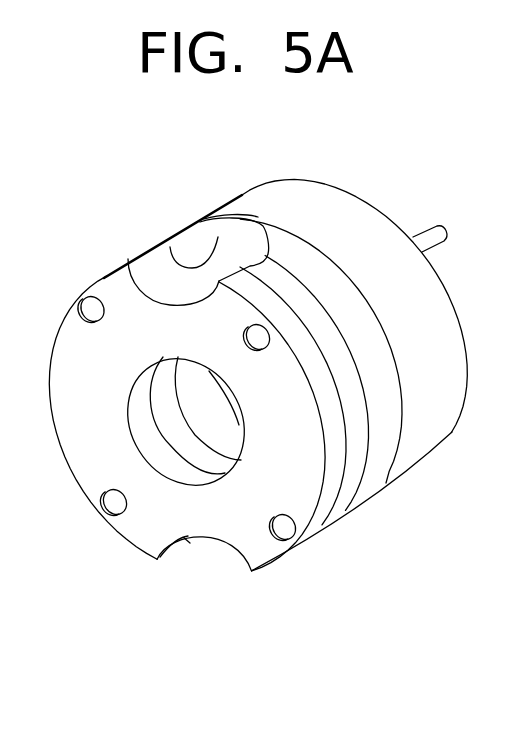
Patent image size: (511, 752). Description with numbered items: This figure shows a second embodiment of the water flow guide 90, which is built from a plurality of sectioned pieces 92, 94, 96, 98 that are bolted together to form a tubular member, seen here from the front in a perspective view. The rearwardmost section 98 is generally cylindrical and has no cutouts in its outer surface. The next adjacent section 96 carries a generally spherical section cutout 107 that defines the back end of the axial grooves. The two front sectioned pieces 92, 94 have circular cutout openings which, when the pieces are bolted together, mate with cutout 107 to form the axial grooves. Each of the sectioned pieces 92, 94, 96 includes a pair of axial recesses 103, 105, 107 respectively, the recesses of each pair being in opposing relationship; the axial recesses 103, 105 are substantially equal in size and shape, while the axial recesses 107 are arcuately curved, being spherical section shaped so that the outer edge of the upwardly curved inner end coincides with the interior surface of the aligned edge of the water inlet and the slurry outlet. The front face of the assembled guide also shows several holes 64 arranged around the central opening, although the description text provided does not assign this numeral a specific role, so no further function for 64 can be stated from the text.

The water flow guide 90 is at (329, 158).
The mounting holes 64 is at (87, 297).
The sectioned piece 92 is at (323, 508).
The sectioned piece 94 is at (348, 492).
The sectioned piece 96 is at (387, 458).
The rearwardmost section 98 is at (436, 428).
The axial recess 103 is at (143, 268).
The axial recess 105 is at (177, 267).
The axial recess 107 is at (232, 237).